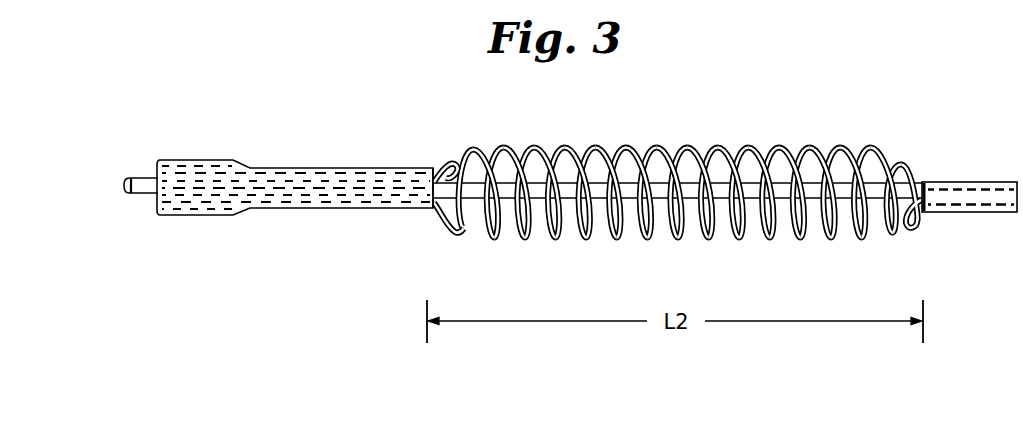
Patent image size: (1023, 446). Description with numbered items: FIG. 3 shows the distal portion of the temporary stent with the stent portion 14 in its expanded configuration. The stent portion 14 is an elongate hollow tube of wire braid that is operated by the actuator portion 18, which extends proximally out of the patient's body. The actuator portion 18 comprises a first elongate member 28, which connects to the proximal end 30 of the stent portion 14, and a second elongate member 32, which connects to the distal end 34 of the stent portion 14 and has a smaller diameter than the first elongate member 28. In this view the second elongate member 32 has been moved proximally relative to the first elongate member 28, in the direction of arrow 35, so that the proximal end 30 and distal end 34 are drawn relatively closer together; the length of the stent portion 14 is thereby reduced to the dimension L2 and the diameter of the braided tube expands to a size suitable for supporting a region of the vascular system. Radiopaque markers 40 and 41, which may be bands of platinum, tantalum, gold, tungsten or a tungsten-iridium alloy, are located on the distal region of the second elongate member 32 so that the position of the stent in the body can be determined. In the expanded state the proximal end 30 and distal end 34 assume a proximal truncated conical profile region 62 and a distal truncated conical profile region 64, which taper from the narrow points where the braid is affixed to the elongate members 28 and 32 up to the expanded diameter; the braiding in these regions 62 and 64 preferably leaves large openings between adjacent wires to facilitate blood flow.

The stent portion 14 is at (930, 149).
The actuator portion 18 is at (180, 226).
The first elongate member 28 is at (188, 160).
The proximal end of the stent portion 30 is at (431, 228).
The second elongate member 32 is at (687, 178).
The distal end of the stent portion 34 is at (928, 227).
The arrow 35 is at (847, 128).
The radiopaque marker 40 is at (812, 183).
The radiopaque marker 41 is at (497, 175).
The proximal truncated conical profile region 62 is at (489, 137).
The distal truncated conical profile region 64 is at (947, 159).